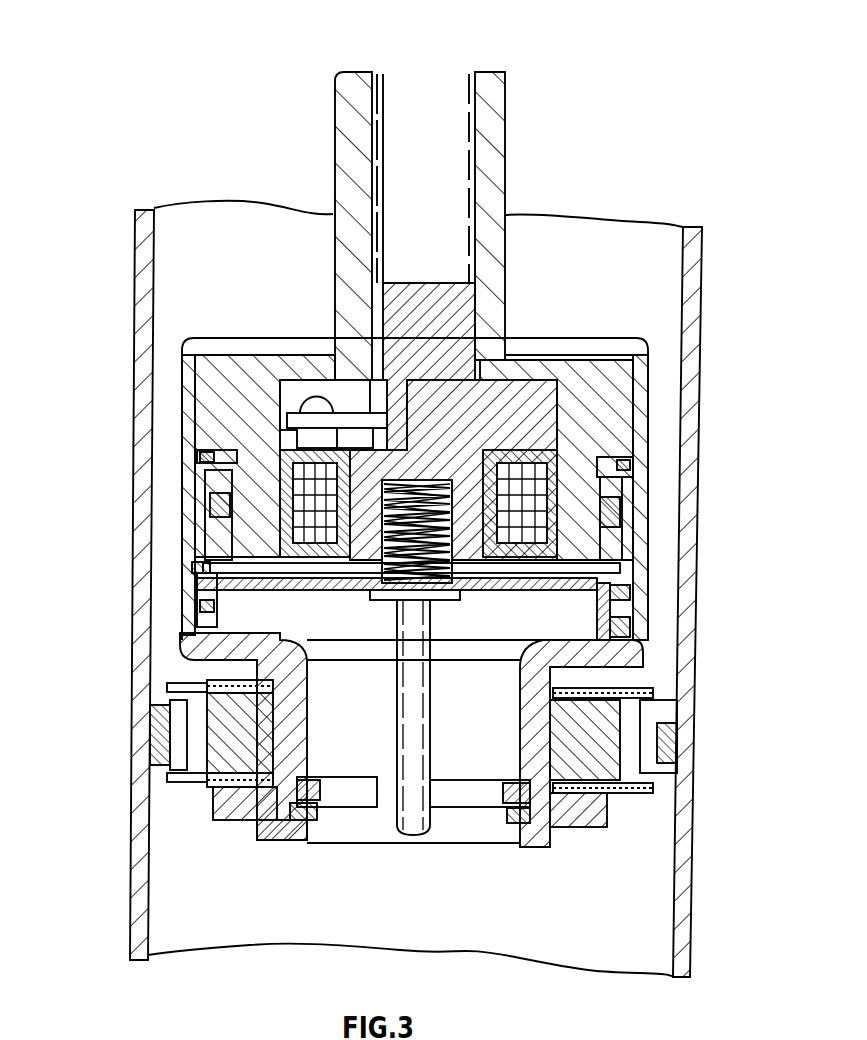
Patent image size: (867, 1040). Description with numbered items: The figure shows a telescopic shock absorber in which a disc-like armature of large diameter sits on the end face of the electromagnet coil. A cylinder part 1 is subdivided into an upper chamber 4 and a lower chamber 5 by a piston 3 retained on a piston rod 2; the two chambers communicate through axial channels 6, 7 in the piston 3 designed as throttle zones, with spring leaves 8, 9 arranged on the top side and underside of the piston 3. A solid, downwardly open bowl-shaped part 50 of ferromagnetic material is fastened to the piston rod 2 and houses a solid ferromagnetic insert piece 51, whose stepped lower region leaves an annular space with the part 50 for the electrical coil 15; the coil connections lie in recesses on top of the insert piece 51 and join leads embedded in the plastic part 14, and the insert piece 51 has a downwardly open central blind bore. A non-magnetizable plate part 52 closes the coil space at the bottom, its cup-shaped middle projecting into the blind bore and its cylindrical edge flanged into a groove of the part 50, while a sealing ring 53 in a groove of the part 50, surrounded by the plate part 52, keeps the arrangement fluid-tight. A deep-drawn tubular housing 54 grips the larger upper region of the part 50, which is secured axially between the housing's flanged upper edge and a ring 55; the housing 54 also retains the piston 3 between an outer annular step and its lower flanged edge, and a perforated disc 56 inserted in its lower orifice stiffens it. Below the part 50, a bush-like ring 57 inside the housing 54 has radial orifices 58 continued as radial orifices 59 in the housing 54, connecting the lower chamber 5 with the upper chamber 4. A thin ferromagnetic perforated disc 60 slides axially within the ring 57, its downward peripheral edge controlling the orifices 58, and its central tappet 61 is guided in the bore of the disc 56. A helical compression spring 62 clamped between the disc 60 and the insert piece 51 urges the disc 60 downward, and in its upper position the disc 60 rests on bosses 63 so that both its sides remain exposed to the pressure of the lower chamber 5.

The cylinder part 1 is at (148, 245).
The piston rod 2 is at (354, 85).
The piston 3 is at (170, 763).
The upper chamber 4 is at (165, 277).
The lower chamber 5 is at (183, 908).
The axial channel 6 is at (625, 742).
The axial channel 7 is at (193, 710).
The spring leaf 8 is at (640, 715).
The spring leaf 9 is at (203, 773).
The plastic part 14 is at (470, 298).
The electrical coil 15 is at (297, 531).
The bowl-shaped part 50 is at (613, 432).
The insert piece 51 is at (530, 405).
The plate part 52 is at (643, 563).
The sealing ring 53 is at (615, 515).
The tubular housing 54 is at (650, 360).
The ring 55 is at (627, 463).
The perforated disc 56 is at (575, 827).
The bush-like ring 57 is at (650, 640).
The radial orifices 58 is at (625, 607).
The radial orifices 59 is at (637, 623).
The perforated disc 60 is at (512, 590).
The central tappet 61 is at (420, 812).
The helical compression spring 62 is at (380, 548).
The bosses 63 is at (222, 625).